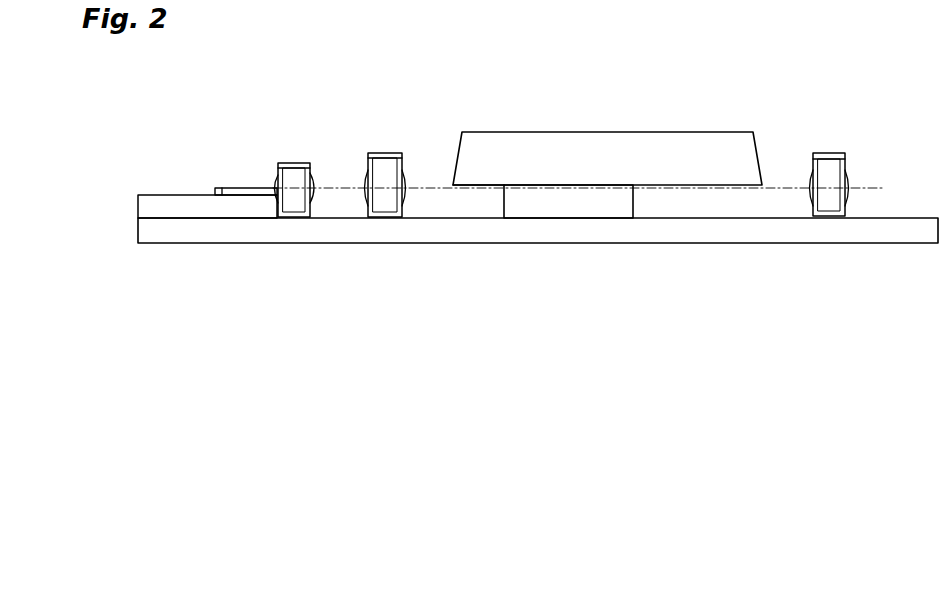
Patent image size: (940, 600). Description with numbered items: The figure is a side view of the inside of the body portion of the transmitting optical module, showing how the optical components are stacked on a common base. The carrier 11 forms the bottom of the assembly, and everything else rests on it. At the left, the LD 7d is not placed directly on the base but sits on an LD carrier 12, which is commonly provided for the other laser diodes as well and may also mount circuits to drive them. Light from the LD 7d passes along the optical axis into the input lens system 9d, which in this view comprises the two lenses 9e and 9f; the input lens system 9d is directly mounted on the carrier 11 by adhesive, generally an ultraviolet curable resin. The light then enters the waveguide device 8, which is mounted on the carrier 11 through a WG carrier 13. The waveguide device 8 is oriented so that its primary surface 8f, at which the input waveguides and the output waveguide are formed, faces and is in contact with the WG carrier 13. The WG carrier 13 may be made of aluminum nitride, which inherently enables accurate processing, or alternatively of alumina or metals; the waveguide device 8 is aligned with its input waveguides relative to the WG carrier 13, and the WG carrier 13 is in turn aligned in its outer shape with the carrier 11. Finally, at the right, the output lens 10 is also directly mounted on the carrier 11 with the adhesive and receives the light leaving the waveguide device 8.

The LD 7d is at (222, 186).
The waveguide device 8 is at (681, 147).
The primary surface 8f is at (473, 190).
The input lens system 9d is at (277, 110).
The lens 9e is at (294, 170).
The lens 9f is at (383, 160).
The output lens 10 is at (835, 165).
The carrier 11 is at (808, 232).
The LD carrier 12 is at (155, 197).
The WG carrier 13 is at (587, 205).